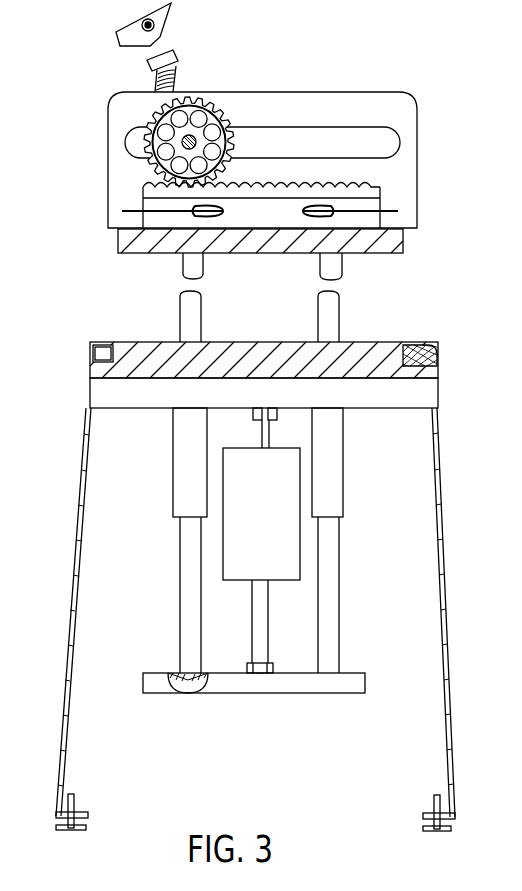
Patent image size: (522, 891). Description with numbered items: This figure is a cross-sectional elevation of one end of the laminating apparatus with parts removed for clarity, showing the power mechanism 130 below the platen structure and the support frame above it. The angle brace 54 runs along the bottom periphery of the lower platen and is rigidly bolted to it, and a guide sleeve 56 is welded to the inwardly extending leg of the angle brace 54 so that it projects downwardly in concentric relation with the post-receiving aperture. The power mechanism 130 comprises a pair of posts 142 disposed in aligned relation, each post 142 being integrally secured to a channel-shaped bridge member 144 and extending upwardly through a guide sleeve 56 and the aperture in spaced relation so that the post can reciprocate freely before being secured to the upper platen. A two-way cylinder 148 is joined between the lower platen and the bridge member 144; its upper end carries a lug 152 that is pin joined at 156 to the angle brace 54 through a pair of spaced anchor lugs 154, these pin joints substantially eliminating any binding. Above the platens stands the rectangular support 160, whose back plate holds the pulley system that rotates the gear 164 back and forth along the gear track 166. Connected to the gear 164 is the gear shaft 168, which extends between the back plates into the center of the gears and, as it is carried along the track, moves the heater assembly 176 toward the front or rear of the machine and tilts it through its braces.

The angle brace 54 is at (383, 410).
The guide sleeve 56 is at (181, 480).
The power mechanism 130 is at (345, 573).
The post 142 is at (183, 565).
The bridge member 144 is at (343, 693).
The two-way cylinder 148 is at (237, 581).
The lug 152 is at (266, 433).
The anchor lug 154 is at (260, 427).
The pin joint 156 is at (272, 420).
The rectangular support 160 is at (425, 153).
The gear 164 is at (232, 118).
The gear track 166 is at (315, 185).
The gear shaft 168 is at (196, 132).
The heater assembly 176 is at (168, 15).